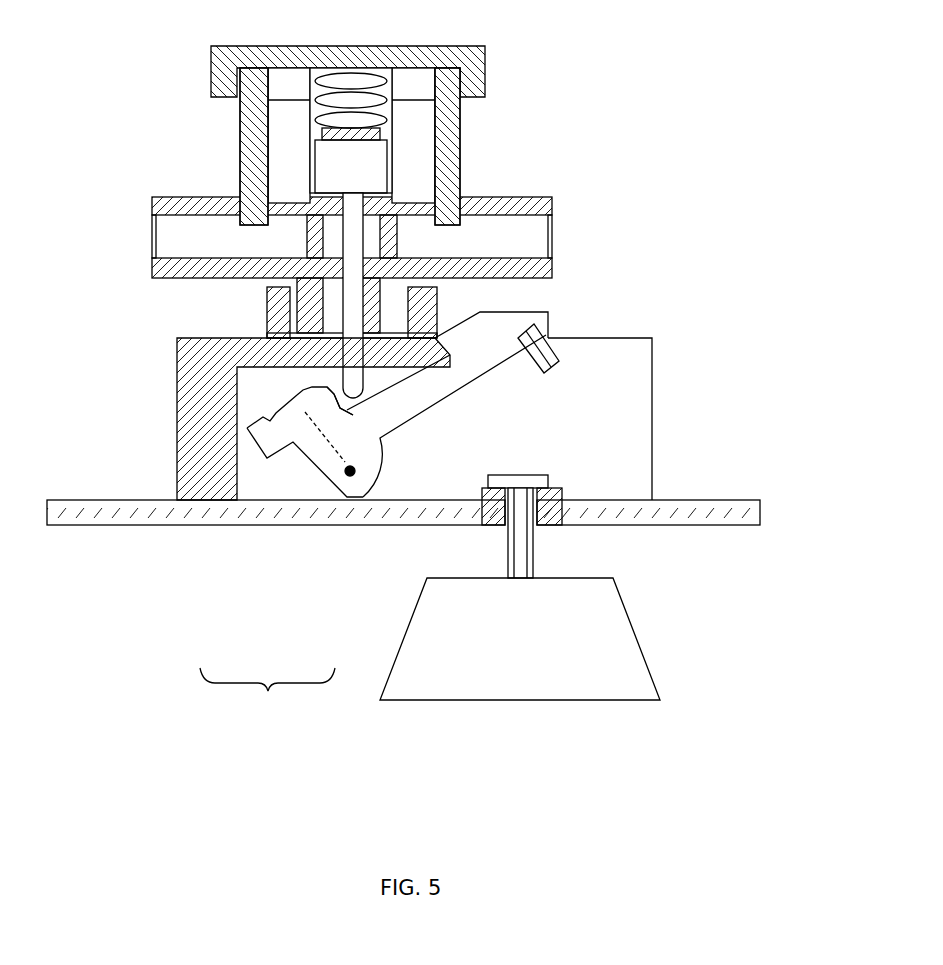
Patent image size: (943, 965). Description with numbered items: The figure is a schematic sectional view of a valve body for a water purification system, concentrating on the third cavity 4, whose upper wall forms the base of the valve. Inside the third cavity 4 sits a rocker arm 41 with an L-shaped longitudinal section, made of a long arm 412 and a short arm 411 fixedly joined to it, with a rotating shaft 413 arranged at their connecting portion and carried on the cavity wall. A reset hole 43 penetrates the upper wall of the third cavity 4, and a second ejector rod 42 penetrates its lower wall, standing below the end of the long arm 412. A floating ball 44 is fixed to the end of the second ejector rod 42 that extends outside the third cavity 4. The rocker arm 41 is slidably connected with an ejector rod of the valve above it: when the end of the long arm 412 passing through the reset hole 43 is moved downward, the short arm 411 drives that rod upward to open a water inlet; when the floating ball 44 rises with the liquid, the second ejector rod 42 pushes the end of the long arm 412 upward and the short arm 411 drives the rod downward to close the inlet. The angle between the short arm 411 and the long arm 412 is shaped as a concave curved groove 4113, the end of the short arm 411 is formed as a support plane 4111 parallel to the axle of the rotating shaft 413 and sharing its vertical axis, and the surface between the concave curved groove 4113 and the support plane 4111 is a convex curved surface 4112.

The third cavity 4 is at (625, 365).
The rocker arm 41 is at (267, 702).
The short arm 411 is at (374, 395).
The support plane 4111 is at (275, 415).
The convex curved surface 4112 is at (335, 400).
The concave curved groove 4113 is at (340, 414).
The long arm 412 is at (378, 437).
The rotating shaft 413 is at (347, 473).
The second ejector rod 42 is at (523, 538).
The reset hole 43 is at (548, 333).
The floating ball 44 is at (460, 627).